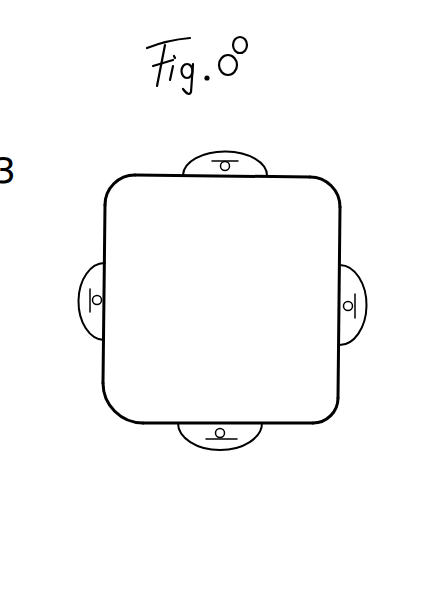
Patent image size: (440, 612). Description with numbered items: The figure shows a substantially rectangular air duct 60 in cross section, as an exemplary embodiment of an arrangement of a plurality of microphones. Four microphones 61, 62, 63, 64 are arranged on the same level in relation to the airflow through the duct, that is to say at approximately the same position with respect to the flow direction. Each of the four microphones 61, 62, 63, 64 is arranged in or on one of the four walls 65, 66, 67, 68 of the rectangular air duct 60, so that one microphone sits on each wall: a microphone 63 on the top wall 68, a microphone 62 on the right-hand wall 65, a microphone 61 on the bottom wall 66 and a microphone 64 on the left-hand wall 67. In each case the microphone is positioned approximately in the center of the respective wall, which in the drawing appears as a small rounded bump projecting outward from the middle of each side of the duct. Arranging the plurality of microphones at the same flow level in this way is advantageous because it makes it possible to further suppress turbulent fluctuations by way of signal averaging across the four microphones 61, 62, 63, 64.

The air duct 60 is at (226, 325).
The microphone 61 is at (238, 450).
The microphone 62 is at (365, 293).
The microphone 63 is at (240, 155).
The microphone 64 is at (89, 279).
The wall 65 is at (343, 228).
The wall 66 is at (289, 431).
The wall 67 is at (77, 321).
The wall 68 is at (281, 176).